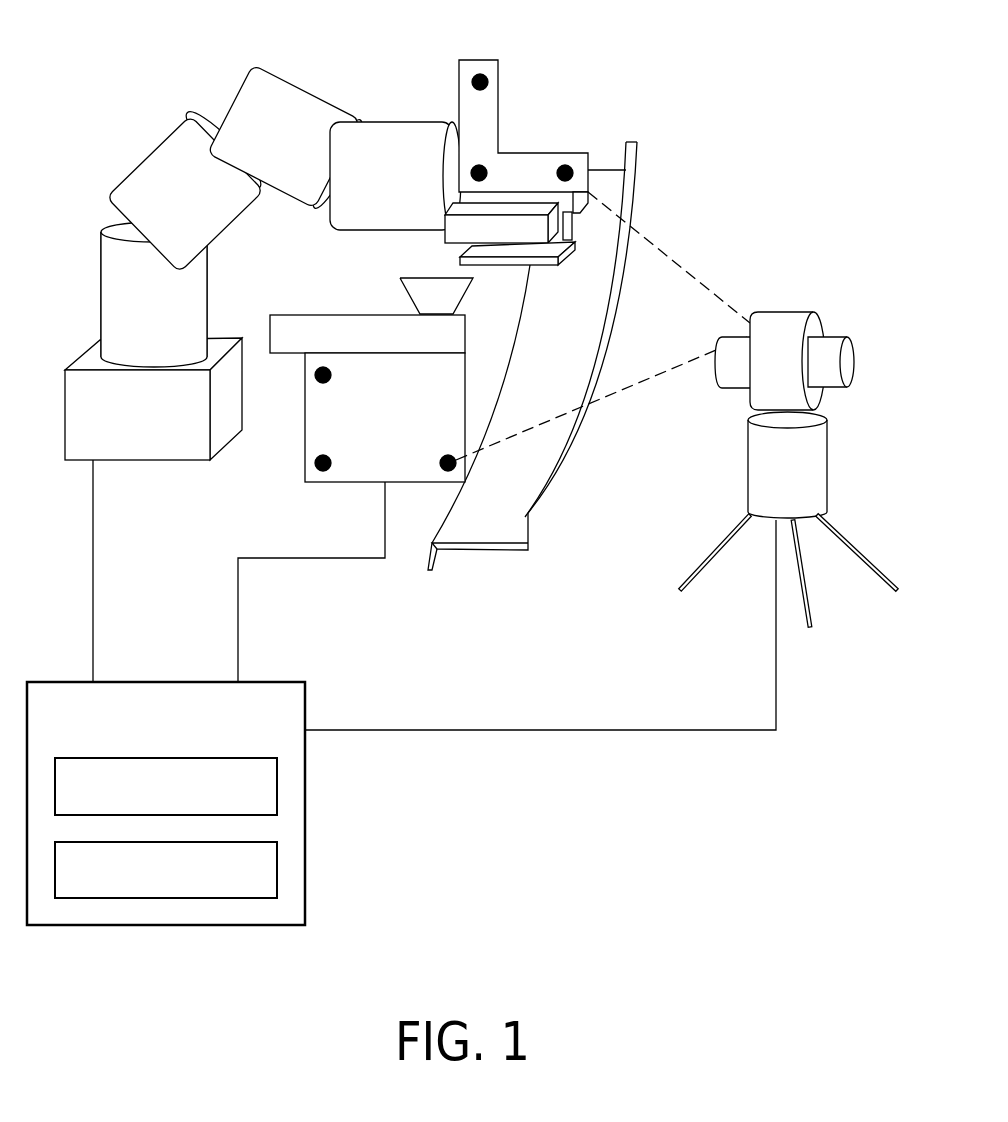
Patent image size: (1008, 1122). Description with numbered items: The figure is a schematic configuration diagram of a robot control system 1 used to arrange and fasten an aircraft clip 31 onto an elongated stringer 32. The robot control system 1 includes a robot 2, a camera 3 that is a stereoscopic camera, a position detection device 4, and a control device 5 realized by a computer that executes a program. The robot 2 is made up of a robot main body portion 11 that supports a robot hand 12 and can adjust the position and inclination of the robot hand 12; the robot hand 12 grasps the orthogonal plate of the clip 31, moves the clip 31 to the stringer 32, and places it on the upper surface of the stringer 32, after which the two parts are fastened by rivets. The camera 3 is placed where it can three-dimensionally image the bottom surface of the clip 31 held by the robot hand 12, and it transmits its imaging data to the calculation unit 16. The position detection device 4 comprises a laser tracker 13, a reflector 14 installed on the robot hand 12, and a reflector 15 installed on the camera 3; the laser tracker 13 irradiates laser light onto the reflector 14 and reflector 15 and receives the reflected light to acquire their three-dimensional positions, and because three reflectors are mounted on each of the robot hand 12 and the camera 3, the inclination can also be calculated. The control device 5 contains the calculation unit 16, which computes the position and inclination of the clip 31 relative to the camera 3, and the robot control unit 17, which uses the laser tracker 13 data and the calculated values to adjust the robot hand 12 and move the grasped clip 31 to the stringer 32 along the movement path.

The robot control system 1 is at (734, 112).
The robot 2 is at (263, 230).
The camera 3 is at (305, 458).
The position detection device 4 is at (818, 270).
The control device 5 is at (205, 803).
The robot main body portion 11 is at (156, 151).
The robot hand 12 is at (445, 232).
The laser tracker 13 is at (748, 462).
The reflector 14 is at (488, 82).
The reflector 15 is at (331, 375).
The calculation unit 16 is at (278, 787).
The robot control unit 17 is at (278, 870).
The clip 31 is at (493, 267).
The stringer 32 is at (607, 170).